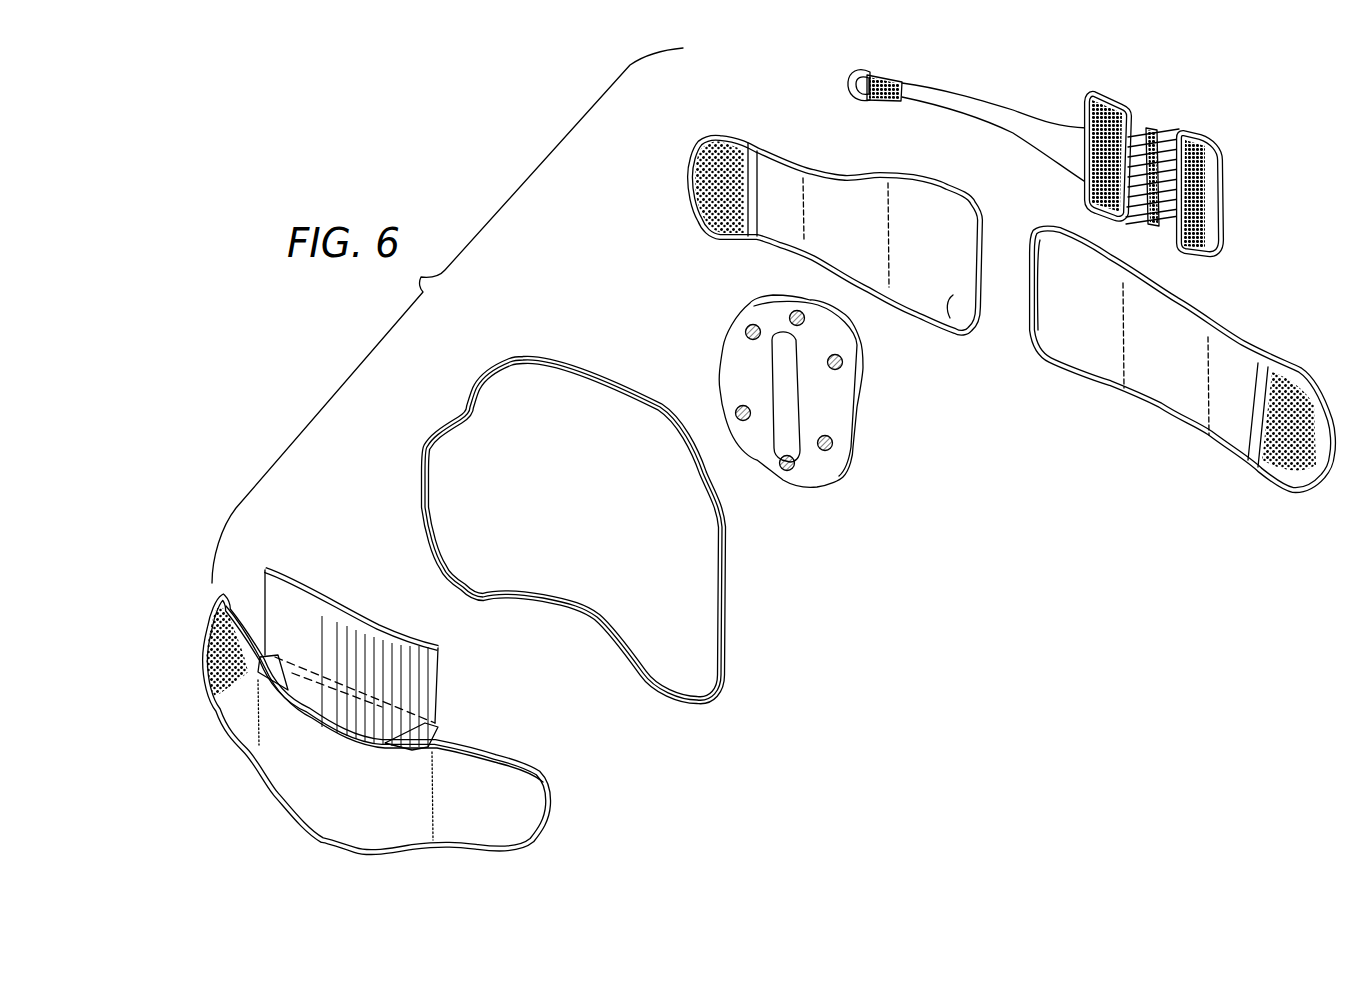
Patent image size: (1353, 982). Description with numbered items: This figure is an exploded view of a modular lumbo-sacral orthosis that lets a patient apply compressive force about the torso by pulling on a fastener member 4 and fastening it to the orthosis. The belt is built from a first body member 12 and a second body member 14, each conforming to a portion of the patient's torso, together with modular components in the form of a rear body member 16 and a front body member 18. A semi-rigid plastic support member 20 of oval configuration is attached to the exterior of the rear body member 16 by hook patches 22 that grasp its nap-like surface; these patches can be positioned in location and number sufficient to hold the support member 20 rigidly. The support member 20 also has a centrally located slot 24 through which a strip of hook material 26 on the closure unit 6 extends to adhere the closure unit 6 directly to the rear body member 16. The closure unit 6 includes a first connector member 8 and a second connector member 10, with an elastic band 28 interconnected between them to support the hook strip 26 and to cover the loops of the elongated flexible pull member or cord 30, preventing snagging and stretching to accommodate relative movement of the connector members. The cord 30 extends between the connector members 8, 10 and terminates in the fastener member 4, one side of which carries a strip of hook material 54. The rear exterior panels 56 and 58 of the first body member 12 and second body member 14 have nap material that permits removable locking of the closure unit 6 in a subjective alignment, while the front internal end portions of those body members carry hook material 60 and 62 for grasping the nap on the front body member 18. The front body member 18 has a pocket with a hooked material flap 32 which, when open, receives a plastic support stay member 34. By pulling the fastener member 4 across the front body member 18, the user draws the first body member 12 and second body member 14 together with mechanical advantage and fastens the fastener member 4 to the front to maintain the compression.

The fastener member 4 is at (861, 102).
The closure unit 6 is at (1167, 170).
The first connector member 8 is at (1086, 105).
The second connector member 10 is at (1212, 135).
The first body member 12 is at (1165, 379).
The second body member 14 is at (796, 238).
The rear body member 16 is at (722, 572).
The front body member 18 is at (417, 711).
The support member 20 is at (793, 388).
The hook patches 22 is at (832, 444).
The slot 24 is at (782, 358).
The strip of hook material 26 is at (1151, 133).
The elastic band 28 is at (1167, 228).
The cord 30 is at (953, 126).
The hooked material flap 32 is at (438, 737).
The support stay member 34 is at (430, 690).
The strip of hook material 54 is at (890, 104).
The exterior panel 56 is at (1053, 330).
The exterior panel 58 is at (951, 328).
The hook material 60 is at (1297, 453).
The hook material 62 is at (694, 181).